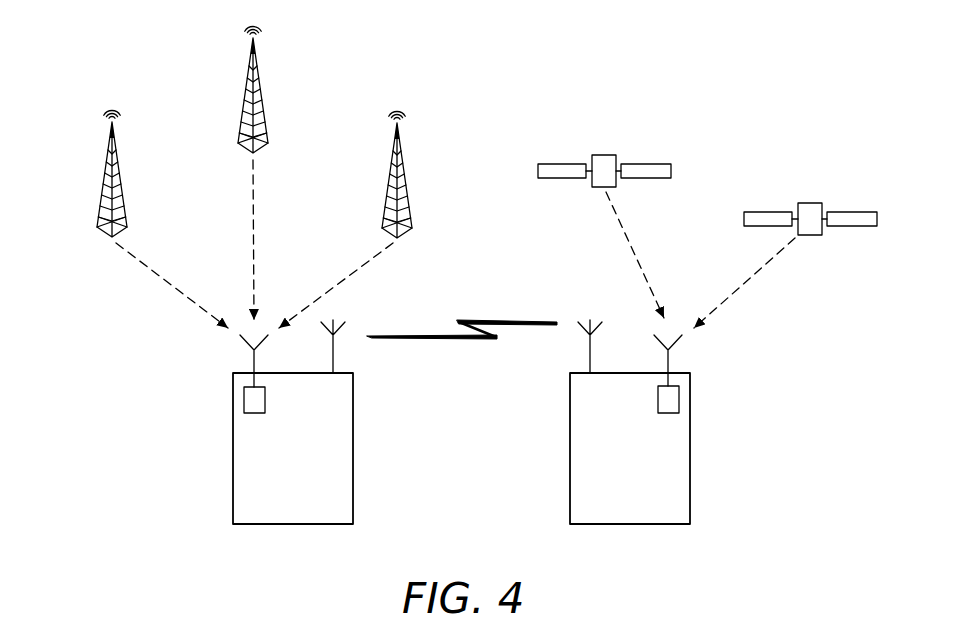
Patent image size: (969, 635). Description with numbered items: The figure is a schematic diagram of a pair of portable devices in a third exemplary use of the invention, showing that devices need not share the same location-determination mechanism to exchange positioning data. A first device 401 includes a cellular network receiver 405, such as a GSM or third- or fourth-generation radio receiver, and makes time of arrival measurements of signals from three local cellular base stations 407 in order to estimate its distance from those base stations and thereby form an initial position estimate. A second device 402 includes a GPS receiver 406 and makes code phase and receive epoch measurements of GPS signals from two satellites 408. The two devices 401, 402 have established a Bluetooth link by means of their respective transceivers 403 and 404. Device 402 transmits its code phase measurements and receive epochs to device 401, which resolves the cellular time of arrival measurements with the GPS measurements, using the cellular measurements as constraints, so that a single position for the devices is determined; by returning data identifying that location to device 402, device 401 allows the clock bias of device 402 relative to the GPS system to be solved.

The device 401 is at (353, 457).
The device 402 is at (570, 457).
The transceiver 403 is at (333, 350).
The transceiver 404 is at (589, 350).
The cellular network receiver 405 is at (244, 397).
The location receiver of second device 406 is at (679, 397).
The cellular base stations 407 is at (104, 178).
The satellites 408 is at (592, 156).